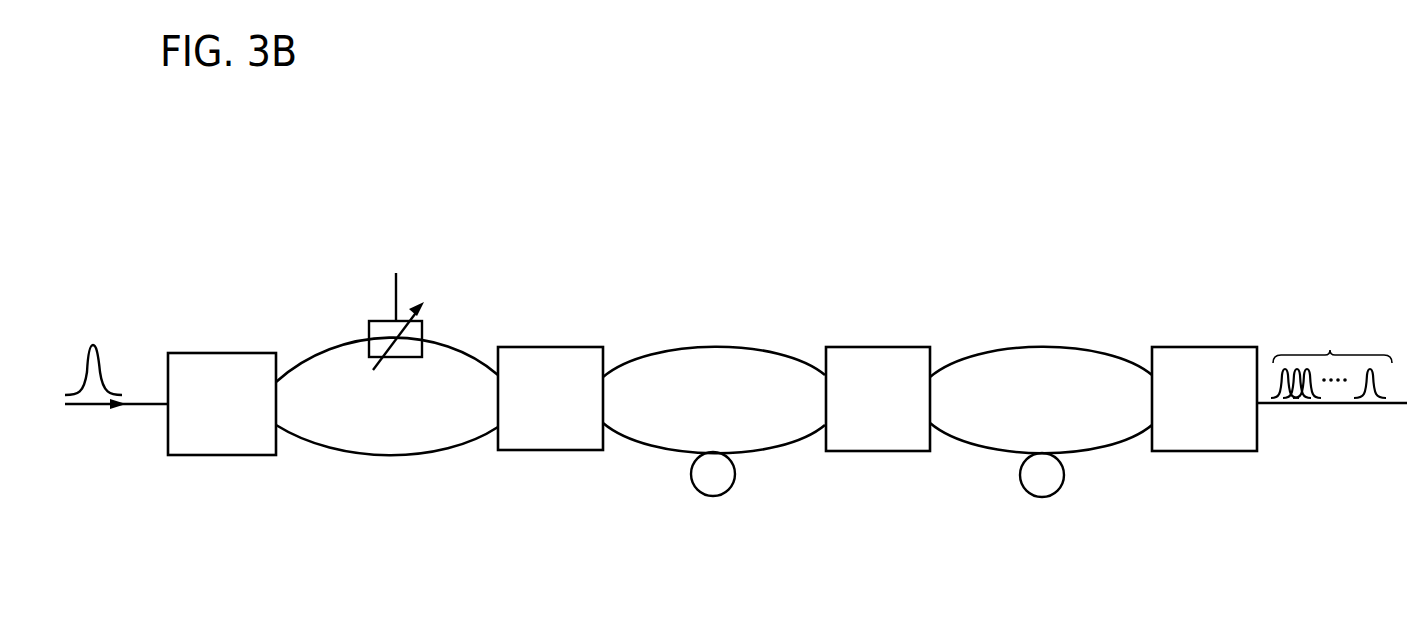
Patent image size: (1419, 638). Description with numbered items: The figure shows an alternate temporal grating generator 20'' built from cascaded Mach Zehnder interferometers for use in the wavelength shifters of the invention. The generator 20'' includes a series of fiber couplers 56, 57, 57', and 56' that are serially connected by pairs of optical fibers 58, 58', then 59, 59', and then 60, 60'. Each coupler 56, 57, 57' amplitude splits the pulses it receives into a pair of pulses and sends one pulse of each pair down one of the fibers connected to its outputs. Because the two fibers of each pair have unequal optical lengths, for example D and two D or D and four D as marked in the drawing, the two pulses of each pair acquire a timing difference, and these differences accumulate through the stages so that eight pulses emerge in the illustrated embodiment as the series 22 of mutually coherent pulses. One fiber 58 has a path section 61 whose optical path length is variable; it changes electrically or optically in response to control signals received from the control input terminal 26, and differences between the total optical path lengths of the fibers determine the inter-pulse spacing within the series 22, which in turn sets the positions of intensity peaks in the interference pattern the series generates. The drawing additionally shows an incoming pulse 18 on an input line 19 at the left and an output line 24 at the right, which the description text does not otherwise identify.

The temporal grating generator 20'' is at (736, 329).
The input optical pulse 18 is at (100, 347).
The input optical fiber 19 is at (85, 408).
The fiber coupler 56 is at (222, 371).
The optical fiber 58 is at (387, 322).
The optical fiber 58' is at (387, 482).
The control input terminal 26 is at (400, 288).
The path section 61 is at (423, 330).
The fiber coupler 57 is at (550, 374).
The optical fiber 59 is at (714, 328).
The optical fiber 59' is at (714, 486).
The fiber coupler 57' is at (879, 372).
The optical fiber 60 is at (1041, 311).
The optical fiber 60' is at (1041, 473).
The fiber coupler 56' is at (1204, 365).
The series of pulses 22 is at (1330, 350).
The output optical fiber 24 is at (1340, 403).